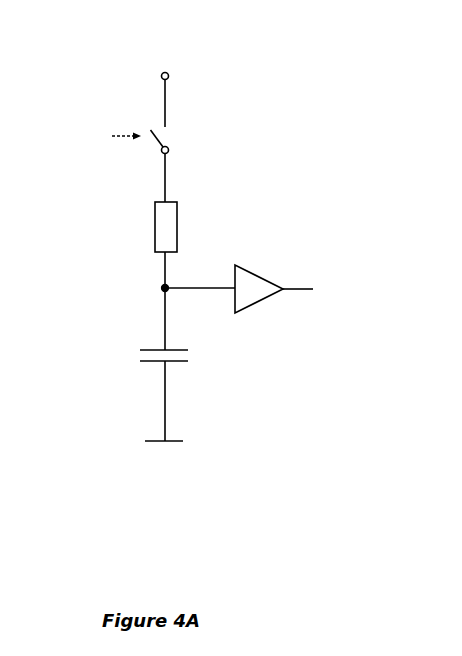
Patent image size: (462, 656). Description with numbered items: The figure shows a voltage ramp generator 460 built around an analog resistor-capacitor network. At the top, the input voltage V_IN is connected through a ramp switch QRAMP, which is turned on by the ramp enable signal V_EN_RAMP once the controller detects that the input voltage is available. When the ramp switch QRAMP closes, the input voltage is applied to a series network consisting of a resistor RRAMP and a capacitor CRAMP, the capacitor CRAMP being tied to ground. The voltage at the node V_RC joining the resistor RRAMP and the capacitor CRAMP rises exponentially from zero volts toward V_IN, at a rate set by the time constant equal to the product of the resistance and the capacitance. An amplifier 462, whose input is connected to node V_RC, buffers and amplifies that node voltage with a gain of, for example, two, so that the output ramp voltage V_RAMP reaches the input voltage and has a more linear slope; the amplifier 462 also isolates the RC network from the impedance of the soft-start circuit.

The voltage ramp generator 460 is at (45, 59).
The amplifier 462 is at (259, 285).
The ramp switch QRAMP is at (192, 142).
The resistor RRAMP is at (137, 227).
The capacitor CRAMP is at (137, 345).